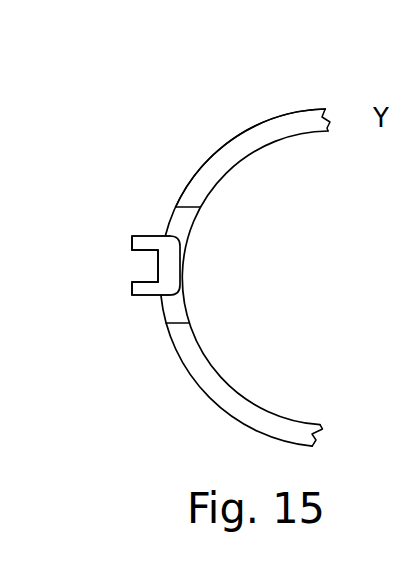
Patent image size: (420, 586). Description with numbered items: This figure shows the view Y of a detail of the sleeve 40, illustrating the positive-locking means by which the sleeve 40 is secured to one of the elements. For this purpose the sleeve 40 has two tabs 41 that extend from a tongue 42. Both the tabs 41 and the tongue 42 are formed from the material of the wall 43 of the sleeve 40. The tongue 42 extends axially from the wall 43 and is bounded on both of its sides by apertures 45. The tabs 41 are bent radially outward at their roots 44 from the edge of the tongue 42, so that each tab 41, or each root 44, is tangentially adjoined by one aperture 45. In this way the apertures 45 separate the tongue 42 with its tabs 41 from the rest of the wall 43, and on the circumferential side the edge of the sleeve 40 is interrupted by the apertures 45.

The sleeve 40 is at (263, 417).
The tabs 41 is at (152, 235).
The tongue 42 is at (173, 268).
The wall 43 is at (146, 282).
The roots 44 is at (270, 119).
The apertures 45 is at (185, 220).